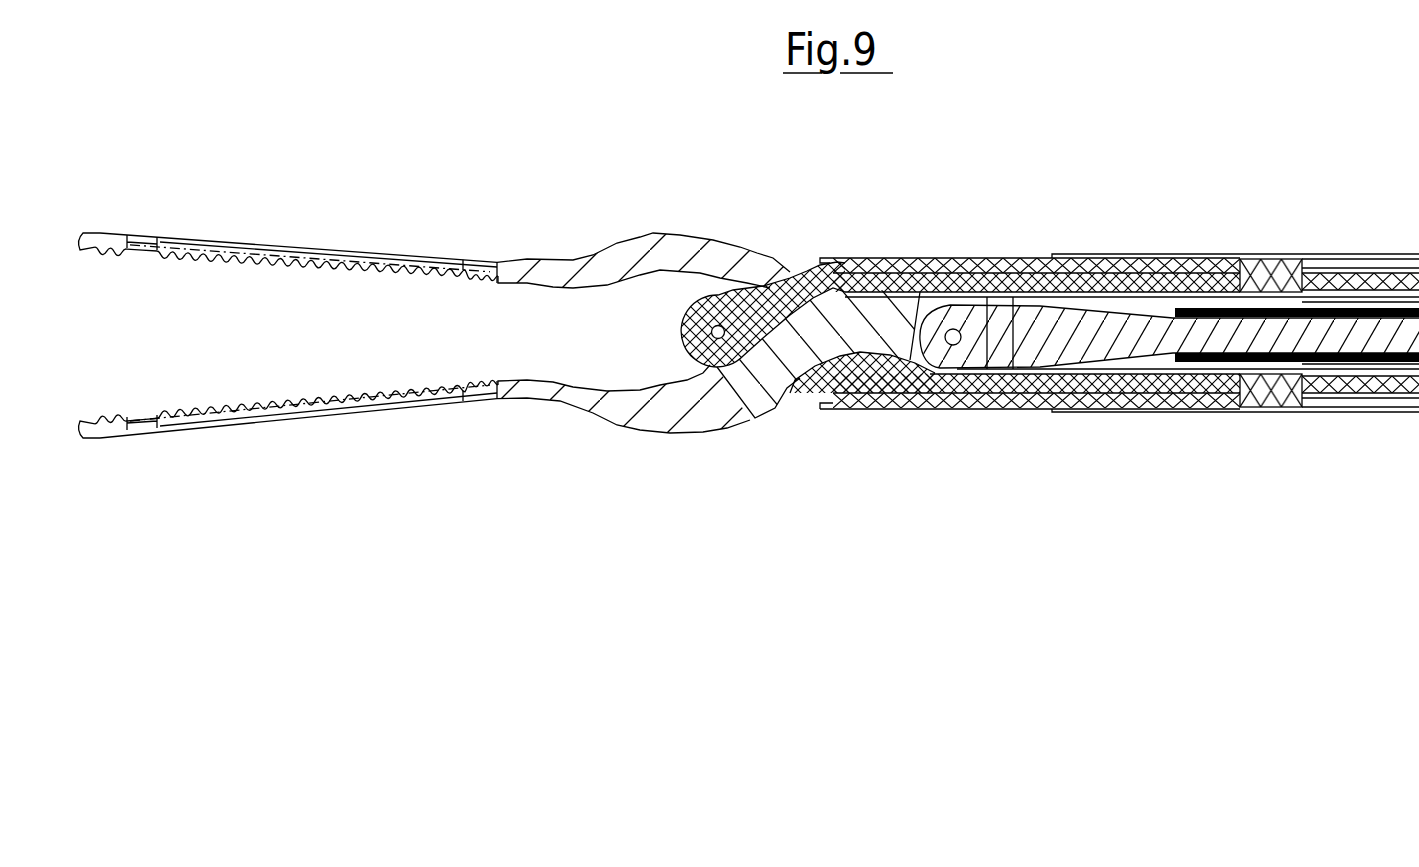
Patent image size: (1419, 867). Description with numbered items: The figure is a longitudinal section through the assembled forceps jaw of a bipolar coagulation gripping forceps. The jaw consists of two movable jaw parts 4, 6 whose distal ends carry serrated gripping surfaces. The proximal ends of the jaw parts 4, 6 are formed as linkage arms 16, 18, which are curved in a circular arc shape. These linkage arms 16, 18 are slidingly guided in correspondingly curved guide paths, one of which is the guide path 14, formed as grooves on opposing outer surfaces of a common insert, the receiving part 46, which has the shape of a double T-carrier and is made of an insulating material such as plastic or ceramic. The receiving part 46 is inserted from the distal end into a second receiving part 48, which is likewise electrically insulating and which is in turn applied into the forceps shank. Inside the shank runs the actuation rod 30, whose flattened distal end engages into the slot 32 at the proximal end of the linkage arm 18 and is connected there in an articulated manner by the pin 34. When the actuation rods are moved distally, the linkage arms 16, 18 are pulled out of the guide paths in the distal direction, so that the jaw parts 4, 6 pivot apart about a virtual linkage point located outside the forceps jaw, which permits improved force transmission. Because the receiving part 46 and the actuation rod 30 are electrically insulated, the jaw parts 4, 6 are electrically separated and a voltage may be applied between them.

The jaw part 4 is at (332, 246).
The jaw part 6 is at (372, 412).
The guide path 14 is at (837, 407).
The linkage arm 16 is at (792, 262).
The linkage arm 18 is at (787, 373).
The actuation rod 30 is at (1328, 254).
The slot 32 is at (907, 407).
The pin 34 is at (957, 345).
The receiving part 46 is at (1008, 260).
The second receiving part 48 is at (1262, 405).